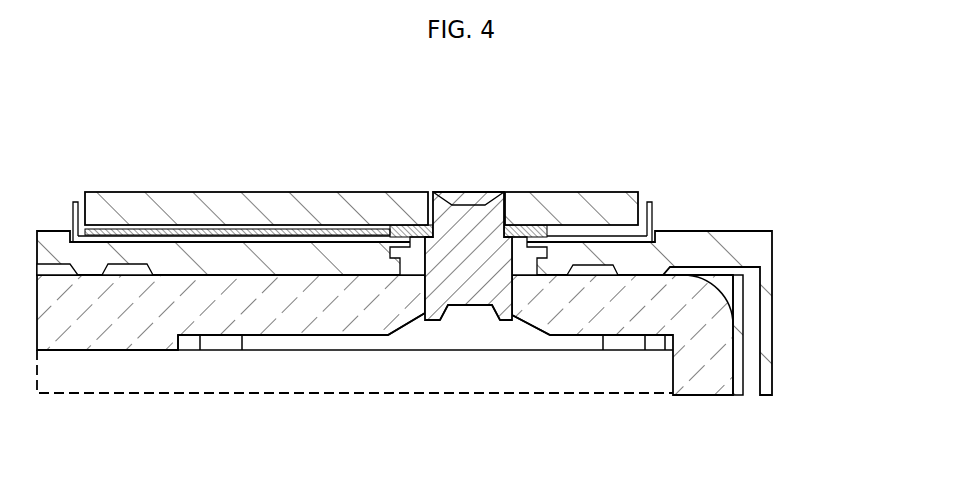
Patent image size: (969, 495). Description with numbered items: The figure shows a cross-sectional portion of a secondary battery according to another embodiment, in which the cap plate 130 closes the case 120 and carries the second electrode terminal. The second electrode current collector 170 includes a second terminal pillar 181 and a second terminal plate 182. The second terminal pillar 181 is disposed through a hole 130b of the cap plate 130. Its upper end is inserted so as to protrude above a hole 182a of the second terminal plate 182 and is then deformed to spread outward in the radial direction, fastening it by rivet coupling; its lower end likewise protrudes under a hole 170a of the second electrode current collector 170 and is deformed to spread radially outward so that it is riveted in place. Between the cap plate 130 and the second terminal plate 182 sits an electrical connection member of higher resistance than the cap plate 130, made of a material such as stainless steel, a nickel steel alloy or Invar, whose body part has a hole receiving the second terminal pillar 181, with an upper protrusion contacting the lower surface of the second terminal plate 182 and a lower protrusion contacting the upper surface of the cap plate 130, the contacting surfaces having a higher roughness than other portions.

The case 120 is at (767, 320).
The cap plate 130 is at (745, 247).
The hole of the cap plate 130b is at (456, 306).
The second electrode current collector 170 is at (590, 336).
The hole of the second electrode current collector 170a is at (481, 300).
The second terminal pillar 181 is at (460, 205).
The second terminal plate 182 is at (598, 192).
The hole of the second terminal plate 182a is at (497, 200).